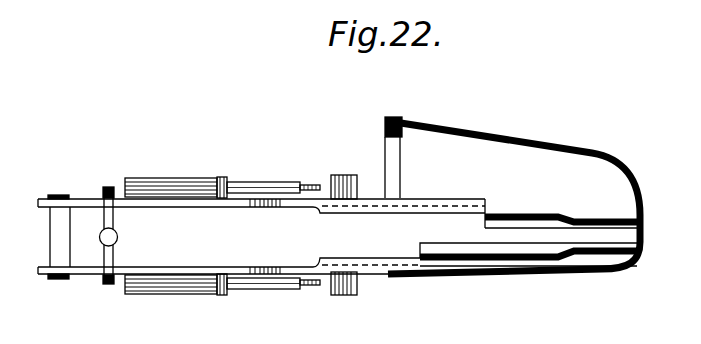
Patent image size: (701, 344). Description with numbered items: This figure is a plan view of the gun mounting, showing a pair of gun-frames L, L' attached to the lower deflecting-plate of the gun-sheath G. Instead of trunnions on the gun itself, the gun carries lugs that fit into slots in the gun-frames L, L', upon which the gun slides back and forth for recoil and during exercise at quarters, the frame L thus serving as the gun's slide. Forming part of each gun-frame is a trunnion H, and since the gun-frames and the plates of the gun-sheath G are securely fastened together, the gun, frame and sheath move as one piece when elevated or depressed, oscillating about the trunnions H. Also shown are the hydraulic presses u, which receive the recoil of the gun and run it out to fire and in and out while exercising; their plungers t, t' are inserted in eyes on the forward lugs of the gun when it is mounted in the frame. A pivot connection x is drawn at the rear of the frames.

The deflecting gun-sheath G is at (512, 195).
The gun-frame L is at (337, 216).
The gun-frame L' is at (337, 237).
The trunnion H is at (344, 236).
The plunger t is at (310, 178).
The plunger t' is at (310, 290).
The hydraulic press u is at (212, 237).
The pivot pin x is at (109, 246).